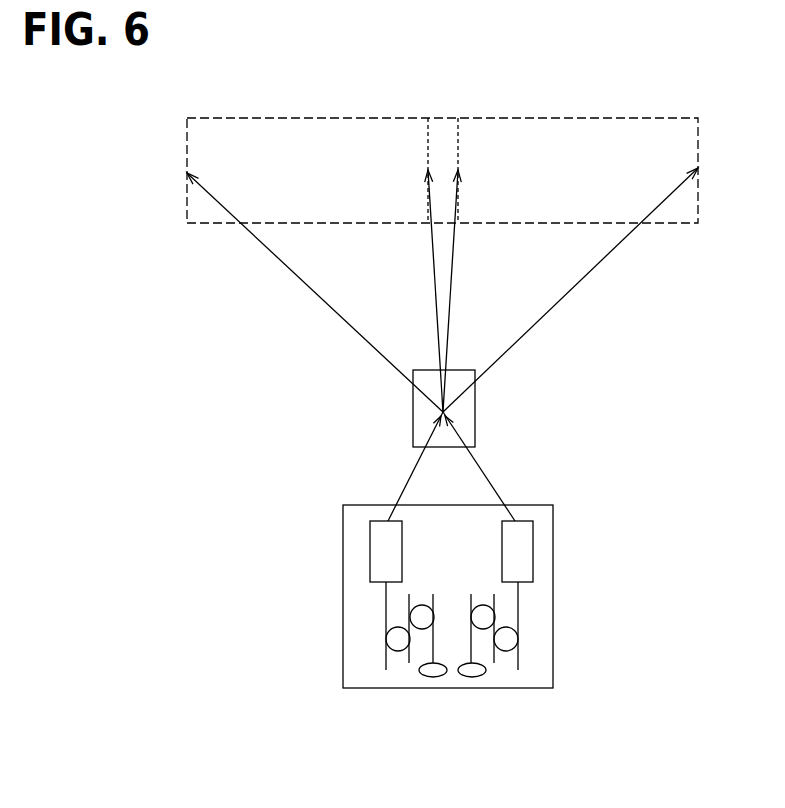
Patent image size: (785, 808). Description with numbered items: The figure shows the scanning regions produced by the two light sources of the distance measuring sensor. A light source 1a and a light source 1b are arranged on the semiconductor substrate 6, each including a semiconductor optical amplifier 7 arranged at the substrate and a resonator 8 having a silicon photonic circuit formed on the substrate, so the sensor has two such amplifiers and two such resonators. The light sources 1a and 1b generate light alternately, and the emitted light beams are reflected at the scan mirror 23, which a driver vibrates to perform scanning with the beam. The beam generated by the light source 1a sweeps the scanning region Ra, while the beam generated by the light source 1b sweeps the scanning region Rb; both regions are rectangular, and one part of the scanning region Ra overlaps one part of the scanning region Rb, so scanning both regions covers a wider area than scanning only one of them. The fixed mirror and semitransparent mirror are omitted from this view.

The semiconductor substrate 6 is at (500, 701).
The semiconductor optical amplifier 7 is at (370, 541).
The resonator 8 is at (387, 640).
The light source 1a is at (363, 605).
The light source 1b is at (535, 605).
The scan mirror 23 is at (463, 404).
The scanning region Ra is at (590, 118).
The scanning region Rb is at (348, 118).